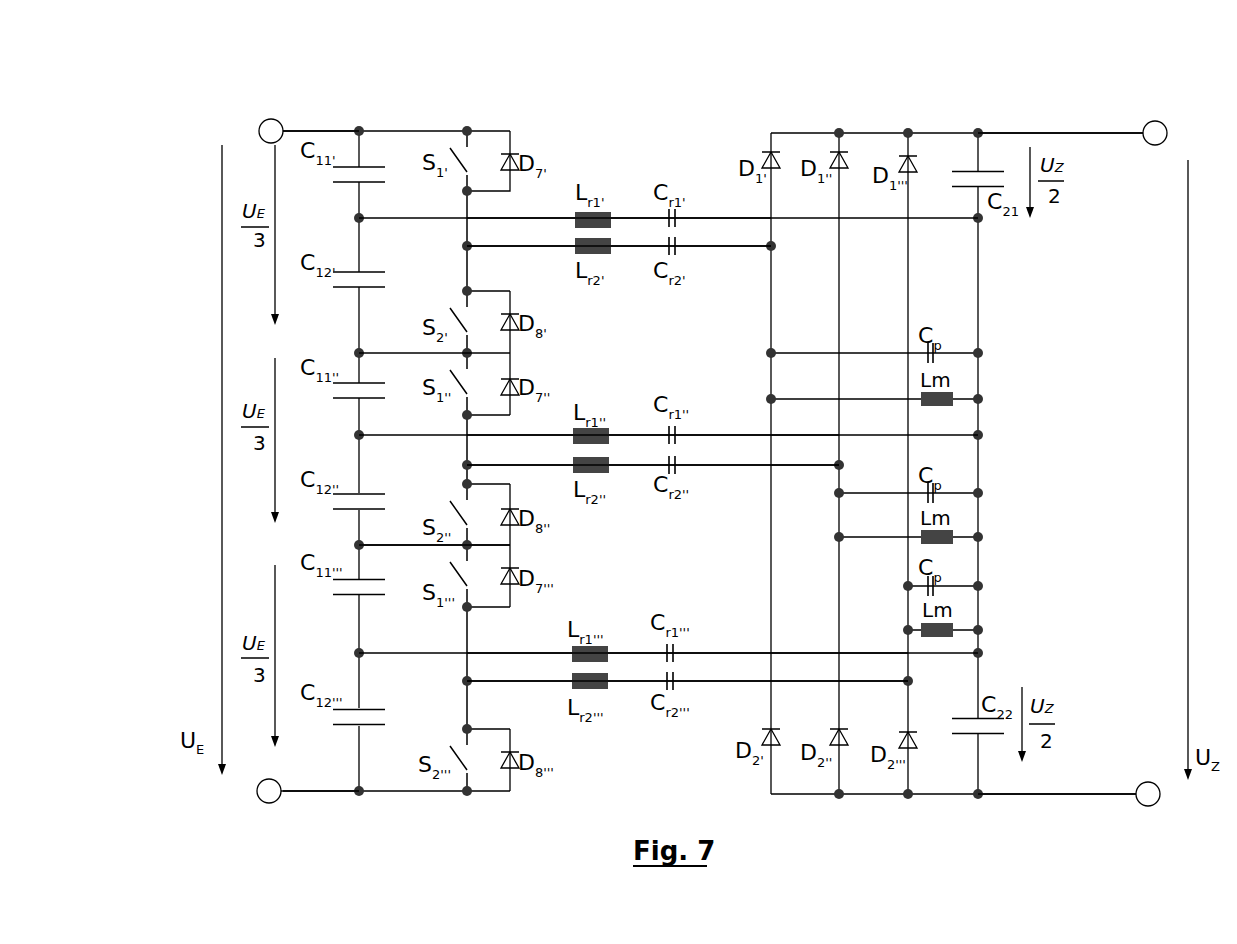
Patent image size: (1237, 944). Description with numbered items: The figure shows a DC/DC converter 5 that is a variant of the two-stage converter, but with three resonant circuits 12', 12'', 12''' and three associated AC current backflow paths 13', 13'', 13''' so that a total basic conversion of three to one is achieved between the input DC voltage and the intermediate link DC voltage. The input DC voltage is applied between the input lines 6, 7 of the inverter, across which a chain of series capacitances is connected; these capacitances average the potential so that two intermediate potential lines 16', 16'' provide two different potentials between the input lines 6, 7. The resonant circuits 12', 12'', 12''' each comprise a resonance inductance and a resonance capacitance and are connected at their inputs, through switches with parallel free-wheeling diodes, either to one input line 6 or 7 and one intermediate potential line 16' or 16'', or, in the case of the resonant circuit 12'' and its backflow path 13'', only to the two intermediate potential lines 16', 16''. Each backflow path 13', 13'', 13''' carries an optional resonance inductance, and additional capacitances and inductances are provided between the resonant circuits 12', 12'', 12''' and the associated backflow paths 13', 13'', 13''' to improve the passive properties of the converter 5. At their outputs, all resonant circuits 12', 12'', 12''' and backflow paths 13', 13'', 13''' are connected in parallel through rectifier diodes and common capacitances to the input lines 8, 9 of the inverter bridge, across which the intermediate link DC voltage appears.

The DC/DC converter 5 is at (577, 98).
The input line 6 is at (310, 130).
The input line 7 is at (313, 792).
The input line of the inverter bridge 8 is at (1120, 132).
The input line of the inverter bridge 9 is at (1110, 795).
The resonant circuit 12' is at (619, 174).
The resonant circuit 12'' is at (653, 390).
The resonant circuit 12''' is at (687, 616).
The AC current backflow path 13' is at (619, 277).
The AC current backflow path 13'' is at (653, 504).
The AC current backflow path 13''' is at (687, 731).
The intermediate potential line 16' is at (434, 327).
The intermediate potential line 16'' is at (434, 513).